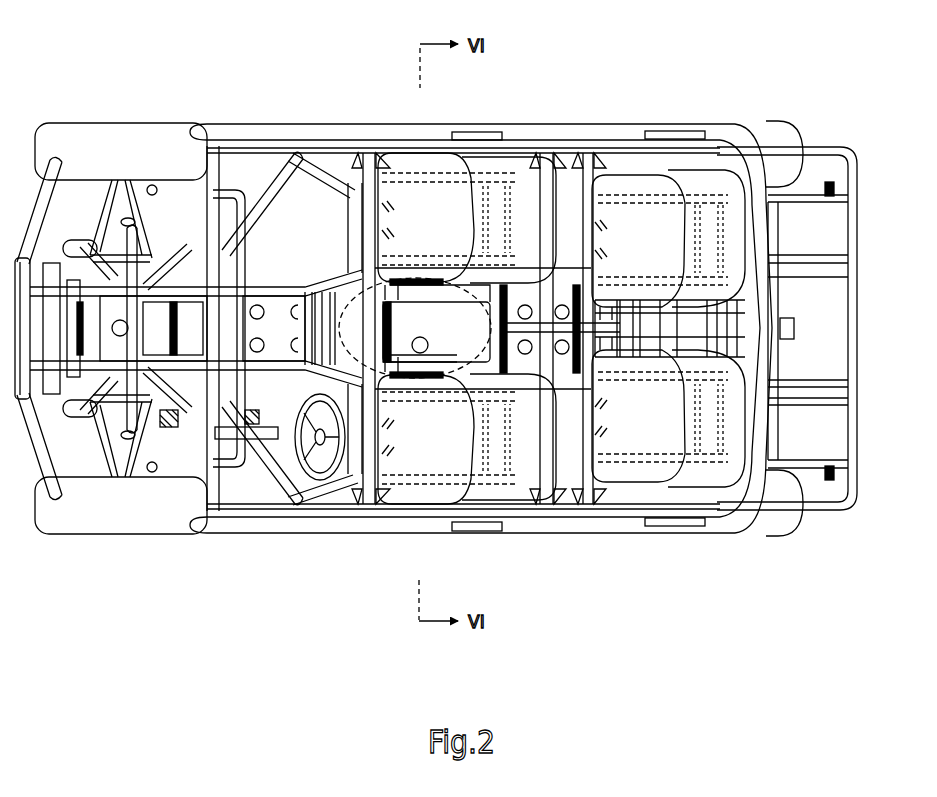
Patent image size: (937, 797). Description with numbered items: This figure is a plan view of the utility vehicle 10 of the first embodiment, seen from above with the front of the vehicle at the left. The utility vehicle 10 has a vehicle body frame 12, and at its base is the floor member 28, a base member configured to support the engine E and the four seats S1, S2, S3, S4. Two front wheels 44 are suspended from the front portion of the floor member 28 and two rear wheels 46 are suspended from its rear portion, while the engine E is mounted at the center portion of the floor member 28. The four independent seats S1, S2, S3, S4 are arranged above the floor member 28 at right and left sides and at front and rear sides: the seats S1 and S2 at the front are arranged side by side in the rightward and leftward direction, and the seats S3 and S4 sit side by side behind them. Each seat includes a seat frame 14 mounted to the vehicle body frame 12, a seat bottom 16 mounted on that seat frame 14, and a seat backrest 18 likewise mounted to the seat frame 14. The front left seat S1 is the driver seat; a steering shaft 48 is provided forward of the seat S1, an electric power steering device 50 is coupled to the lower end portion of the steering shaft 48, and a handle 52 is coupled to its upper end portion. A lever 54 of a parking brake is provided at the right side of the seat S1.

The utility vehicle 10 is at (164, 25).
The vehicle body frame 12 is at (311, 117).
The seat frame 14 is at (503, 170).
The seat bottom 16 is at (438, 198).
The seat backrest 18 is at (490, 187).
The floor member 28 is at (261, 176).
The front wheel 44 is at (117, 140).
The rear wheel 46 is at (770, 130).
The steering shaft 48 is at (253, 448).
The electric power steering device 50 is at (176, 428).
The handle 52 is at (285, 442).
The lever of a parking brake 54 is at (386, 368).
The engine E is at (423, 280).
The seat S1 is at (426, 445).
The seat S2 is at (425, 203).
The seat S3 is at (633, 428).
The seat S4 is at (631, 222).